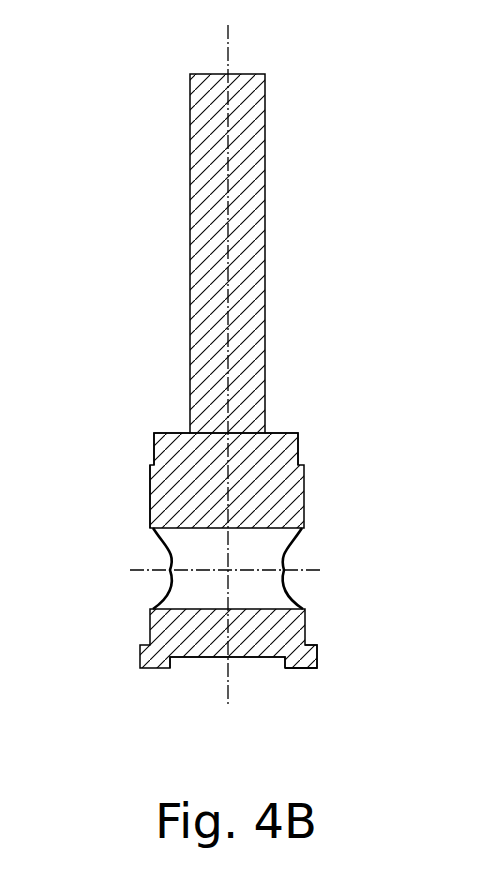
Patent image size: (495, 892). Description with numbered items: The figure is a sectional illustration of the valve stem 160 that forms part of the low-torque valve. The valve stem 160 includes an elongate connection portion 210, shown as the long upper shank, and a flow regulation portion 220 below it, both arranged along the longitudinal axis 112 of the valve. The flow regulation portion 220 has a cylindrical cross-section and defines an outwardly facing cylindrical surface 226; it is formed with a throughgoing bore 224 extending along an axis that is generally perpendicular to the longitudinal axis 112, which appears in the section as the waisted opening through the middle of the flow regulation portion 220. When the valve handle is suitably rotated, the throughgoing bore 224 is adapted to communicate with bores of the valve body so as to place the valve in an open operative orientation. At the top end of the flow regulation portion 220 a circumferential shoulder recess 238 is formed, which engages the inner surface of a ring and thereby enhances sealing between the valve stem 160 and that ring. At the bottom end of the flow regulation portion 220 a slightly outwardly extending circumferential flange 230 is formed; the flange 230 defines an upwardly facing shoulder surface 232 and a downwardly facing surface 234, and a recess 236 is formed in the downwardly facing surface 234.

The longitudinal axis 112 is at (228, 27).
The elongate connection portion 210 is at (245, 243).
The valve stem 160 is at (393, 358).
The circumferential shoulder recess 238 is at (298, 441).
The flow regulation portion 220 is at (296, 508).
The outwardly facing cylindrical surface 226 is at (150, 500).
The throughgoing bore 224 is at (300, 602).
The upwardly facing shoulder surface 232 is at (306, 641).
The circumferential flange 230 is at (317, 652).
The downwardly facing surface 234 is at (308, 669).
The recess 236 is at (260, 668).